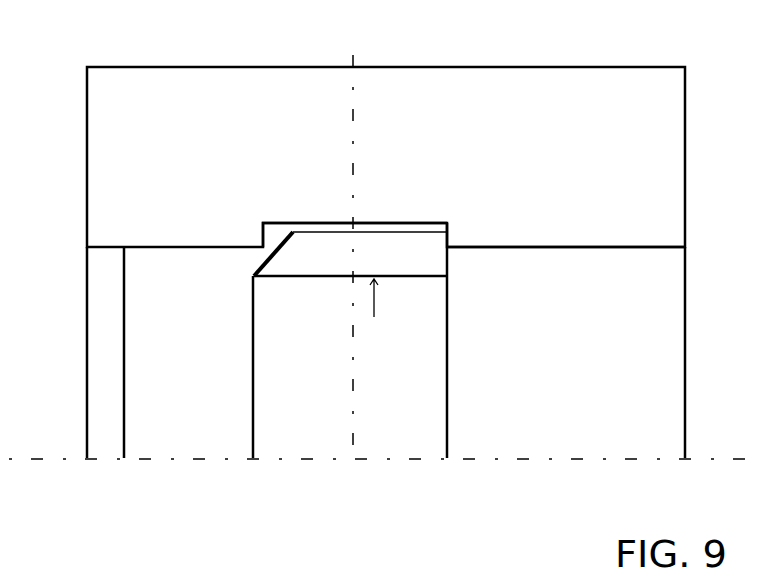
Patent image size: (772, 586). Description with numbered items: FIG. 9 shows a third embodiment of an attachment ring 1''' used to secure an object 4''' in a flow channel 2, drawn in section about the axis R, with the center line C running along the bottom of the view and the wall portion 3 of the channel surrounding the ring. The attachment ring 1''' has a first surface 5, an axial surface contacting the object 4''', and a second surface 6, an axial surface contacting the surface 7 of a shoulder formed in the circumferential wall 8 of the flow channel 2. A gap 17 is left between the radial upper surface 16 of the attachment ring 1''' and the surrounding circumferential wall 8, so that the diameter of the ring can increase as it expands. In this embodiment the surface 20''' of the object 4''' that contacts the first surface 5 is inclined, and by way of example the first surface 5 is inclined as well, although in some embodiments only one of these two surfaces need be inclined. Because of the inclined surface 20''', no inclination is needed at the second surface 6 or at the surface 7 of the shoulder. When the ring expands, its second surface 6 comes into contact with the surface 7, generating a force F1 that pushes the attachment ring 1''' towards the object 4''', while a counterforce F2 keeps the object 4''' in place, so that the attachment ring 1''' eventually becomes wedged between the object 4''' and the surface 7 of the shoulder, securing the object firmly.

The attachment ring 1''' is at (340, 352).
The flow channel 2 is at (677, 306).
The cover 3 is at (685, 95).
The object 4''' is at (385, 486).
The first surface 5 is at (260, 276).
The second surface 6 is at (443, 255).
The surface of the shoulder 7 is at (452, 224).
The circumferential wall 8 is at (538, 248).
The upper surface 16 is at (308, 233).
The gap 17 is at (302, 223).
The surface of the object 20''' is at (234, 260).
The axis R is at (353, 58).
The center line C is at (413, 459).
The force F1 is at (455, 235).
The counterforce F2 is at (122, 280).